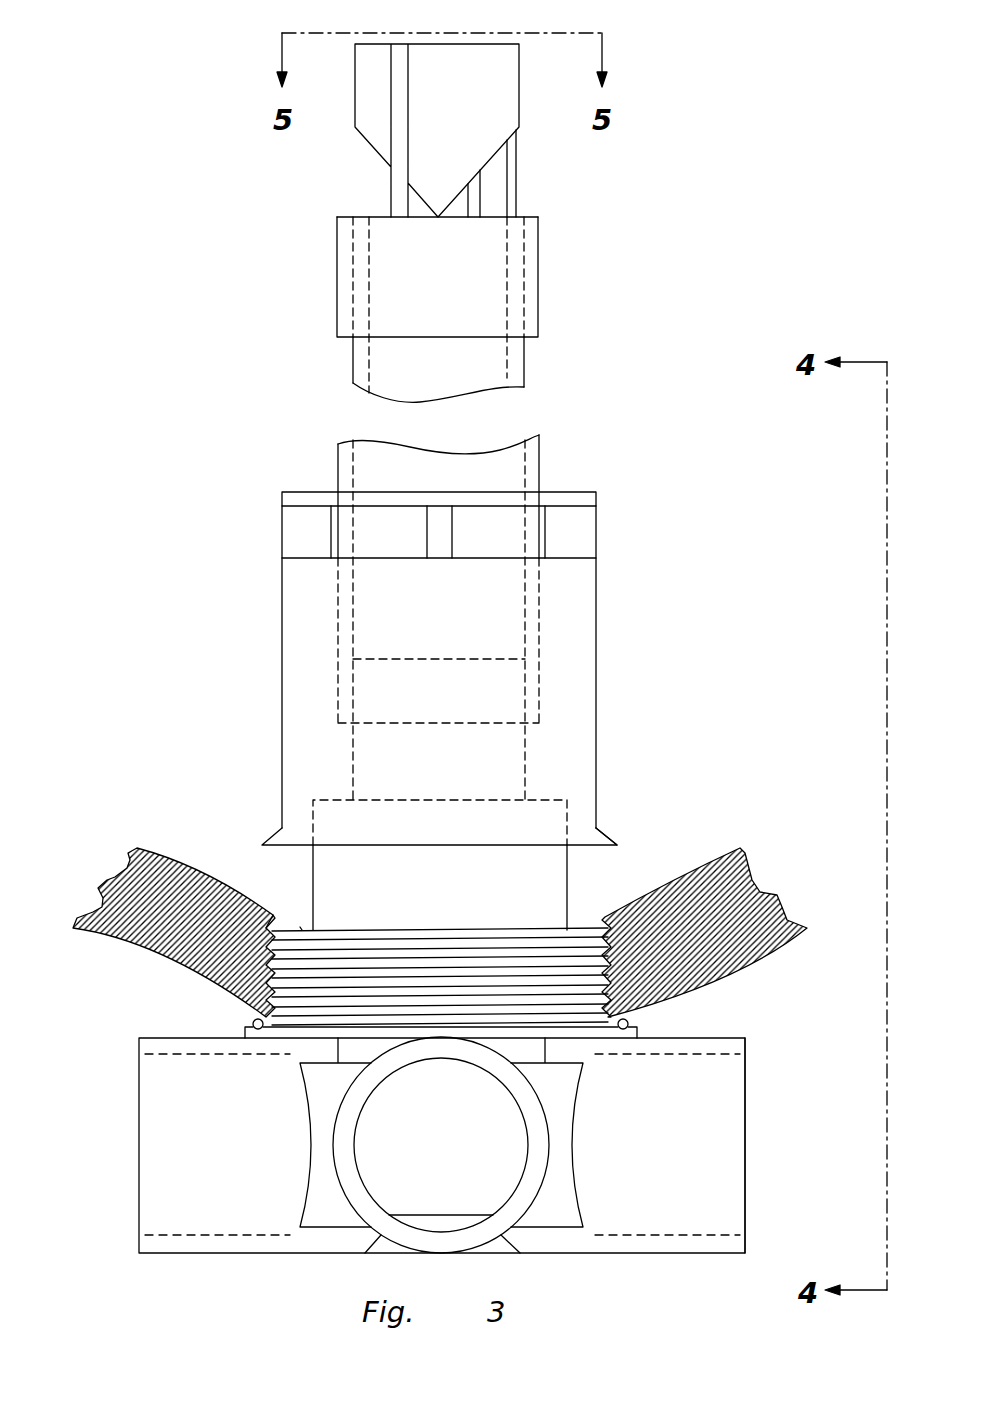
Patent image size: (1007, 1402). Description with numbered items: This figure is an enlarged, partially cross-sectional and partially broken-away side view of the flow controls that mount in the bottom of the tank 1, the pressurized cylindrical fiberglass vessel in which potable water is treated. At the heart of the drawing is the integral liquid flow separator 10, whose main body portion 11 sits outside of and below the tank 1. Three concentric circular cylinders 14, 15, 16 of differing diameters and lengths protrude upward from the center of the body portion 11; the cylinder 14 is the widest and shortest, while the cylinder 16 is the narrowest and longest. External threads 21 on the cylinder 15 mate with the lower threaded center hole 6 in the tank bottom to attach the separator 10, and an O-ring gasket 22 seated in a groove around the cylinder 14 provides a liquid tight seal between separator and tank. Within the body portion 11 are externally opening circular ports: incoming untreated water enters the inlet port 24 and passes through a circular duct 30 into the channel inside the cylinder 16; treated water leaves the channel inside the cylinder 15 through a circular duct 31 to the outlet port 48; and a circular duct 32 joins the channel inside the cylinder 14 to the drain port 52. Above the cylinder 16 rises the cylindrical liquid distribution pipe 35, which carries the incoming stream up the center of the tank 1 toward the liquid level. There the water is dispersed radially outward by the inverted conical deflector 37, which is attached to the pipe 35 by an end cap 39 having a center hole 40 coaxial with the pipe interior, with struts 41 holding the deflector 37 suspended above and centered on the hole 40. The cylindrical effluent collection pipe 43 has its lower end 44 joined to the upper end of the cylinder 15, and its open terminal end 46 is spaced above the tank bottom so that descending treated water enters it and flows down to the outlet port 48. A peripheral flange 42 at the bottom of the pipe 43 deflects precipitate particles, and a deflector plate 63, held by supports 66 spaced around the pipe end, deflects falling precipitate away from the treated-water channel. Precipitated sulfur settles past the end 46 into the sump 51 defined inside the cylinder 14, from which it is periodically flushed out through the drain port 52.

The tank 1 is at (97, 968).
The lower threaded center hole 6 is at (287, 922).
The integral liquid flow separator 10 is at (730, 814).
The main body portion 11 is at (155, 1036).
The cylinder 14 is at (300, 926).
The cylinder 15 is at (568, 870).
The cylinder 16 is at (354, 770).
The external threads 21 is at (440, 955).
The O-ring gasket 22 is at (630, 1023).
The inlet port 24 is at (139, 1053).
The circular duct 30 is at (230, 1235).
The circular duct 31 is at (694, 1235).
The circular duct 32 is at (463, 1159).
The liquid distribution pipe 35 is at (525, 354).
The inverted conical deflector 37 is at (377, 113).
The end cap 39 is at (348, 282).
The center hole 40 is at (383, 216).
The struts 41 is at (512, 172).
The peripheral flange 42 is at (610, 838).
The effluent collection pipe 43 is at (310, 623).
The lower end 44 is at (283, 818).
The open terminal end 46 is at (345, 558).
The outlet port 48 is at (745, 1052).
The sump 51 is at (583, 922).
The drain port 52 is at (537, 1118).
The deflector plate 63 is at (282, 496).
The supports 66 is at (597, 537).